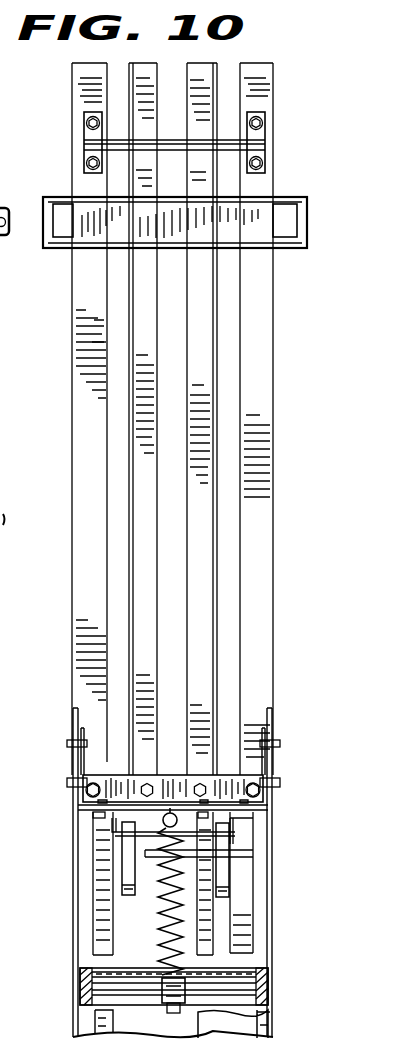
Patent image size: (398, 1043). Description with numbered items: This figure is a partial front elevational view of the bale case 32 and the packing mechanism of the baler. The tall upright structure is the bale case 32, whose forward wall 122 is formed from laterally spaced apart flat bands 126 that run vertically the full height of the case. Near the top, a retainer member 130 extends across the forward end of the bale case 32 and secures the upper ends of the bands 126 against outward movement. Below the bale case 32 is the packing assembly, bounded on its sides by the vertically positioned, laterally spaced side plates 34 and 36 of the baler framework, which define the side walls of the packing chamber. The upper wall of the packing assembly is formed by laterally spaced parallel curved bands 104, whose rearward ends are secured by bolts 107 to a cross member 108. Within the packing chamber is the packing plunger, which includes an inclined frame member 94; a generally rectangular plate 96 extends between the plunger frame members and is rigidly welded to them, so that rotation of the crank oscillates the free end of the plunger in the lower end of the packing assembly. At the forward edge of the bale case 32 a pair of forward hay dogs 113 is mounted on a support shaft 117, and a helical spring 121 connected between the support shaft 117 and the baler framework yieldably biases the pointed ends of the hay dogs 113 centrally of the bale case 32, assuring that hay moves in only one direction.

The bale case 32 is at (72, 427).
The side plate 34 is at (262, 1027).
The side plate 36 is at (73, 1025).
The frame member 94 is at (80, 990).
The rectangular plate 96 is at (236, 969).
The curved bands 104 is at (106, 952).
The bolts 107 is at (90, 788).
The cross member 108 is at (200, 782).
The forward hay dogs 113 is at (128, 890).
The support shaft 117 is at (147, 838).
The helical spring 121 is at (158, 904).
The forward wall 122 is at (116, 557).
The flat bands 126 is at (193, 473).
The retainer member 130 is at (84, 143).